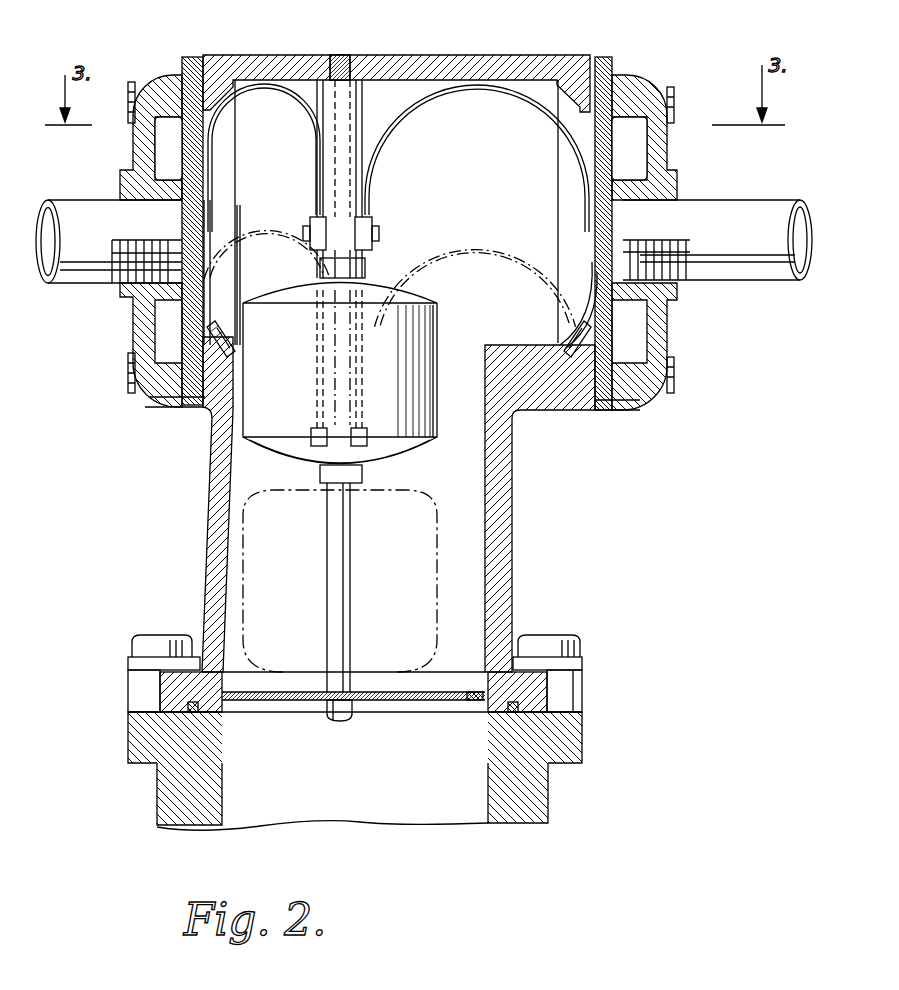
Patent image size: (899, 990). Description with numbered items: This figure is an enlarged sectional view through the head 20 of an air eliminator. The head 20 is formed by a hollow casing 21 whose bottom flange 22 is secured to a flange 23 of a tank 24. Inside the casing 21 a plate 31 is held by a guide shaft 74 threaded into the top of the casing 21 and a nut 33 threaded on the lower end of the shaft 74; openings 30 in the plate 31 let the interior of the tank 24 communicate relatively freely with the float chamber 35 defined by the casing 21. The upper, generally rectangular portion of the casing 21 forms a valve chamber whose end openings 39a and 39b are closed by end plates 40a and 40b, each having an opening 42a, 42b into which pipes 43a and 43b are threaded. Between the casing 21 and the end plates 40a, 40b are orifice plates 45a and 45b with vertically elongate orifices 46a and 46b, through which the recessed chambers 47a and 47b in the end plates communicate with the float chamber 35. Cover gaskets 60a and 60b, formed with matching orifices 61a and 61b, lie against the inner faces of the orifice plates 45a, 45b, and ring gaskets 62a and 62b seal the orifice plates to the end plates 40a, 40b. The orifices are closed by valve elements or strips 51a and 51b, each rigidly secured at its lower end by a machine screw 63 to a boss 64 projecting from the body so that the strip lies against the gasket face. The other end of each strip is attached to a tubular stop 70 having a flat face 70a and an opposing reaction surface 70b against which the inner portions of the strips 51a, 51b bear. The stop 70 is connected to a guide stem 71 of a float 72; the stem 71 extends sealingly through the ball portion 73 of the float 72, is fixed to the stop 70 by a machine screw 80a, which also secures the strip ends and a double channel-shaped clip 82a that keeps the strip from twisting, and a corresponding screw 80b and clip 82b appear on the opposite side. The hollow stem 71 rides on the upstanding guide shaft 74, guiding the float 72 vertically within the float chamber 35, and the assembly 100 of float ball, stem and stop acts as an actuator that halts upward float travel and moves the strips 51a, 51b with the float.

The head 20 is at (398, 504).
The hollow casing 21 is at (506, 513).
The bottom flange 22 is at (540, 692).
The tank flange 23 is at (572, 742).
The tank 24 is at (550, 803).
The openings 30 is at (464, 697).
The plate 31 is at (300, 701).
The nut 33 is at (355, 711).
The float chamber 35 is at (475, 594).
The opening 39a is at (226, 273).
The opening 39b is at (568, 113).
The end plate 40a is at (136, 144).
The end plate 40b is at (662, 159).
The opening 42a is at (118, 283).
The opening 42b is at (683, 284).
The pipe 43a is at (109, 272).
The pipe 43b is at (717, 262).
The orifice plate 45a is at (192, 78).
The orifice plate 45b is at (606, 78).
The orifice 46a is at (212, 226).
The orifice 46b is at (558, 233).
The chamber 47a is at (168, 122).
The chamber 47b is at (645, 130).
The valve element 51a is at (303, 112).
The valve element 51b is at (431, 96).
The cover gasket 60a is at (264, 158).
The cover gasket 60b is at (593, 128).
The orifice 61a is at (206, 243).
The orifice 61b is at (590, 263).
The ring gasket 62a is at (186, 408).
The ring gasket 62b is at (614, 411).
The machine screw 63 is at (232, 339).
The boss 64 is at (224, 323).
The tubular stop 70 is at (364, 161).
The flat face 70a is at (320, 86).
The reaction surface 70b is at (363, 100).
The guide stem 71 is at (366, 271).
The float 72 is at (255, 470).
The ball portion 73 is at (400, 462).
The guide shaft 74 is at (352, 585).
The machine screw 80a is at (306, 242).
The right set screw 80b is at (380, 234).
The double channel-shaped clip 82a is at (312, 222).
The right clamp block 82b is at (373, 222).
The actuator assembly 100 is at (243, 565).